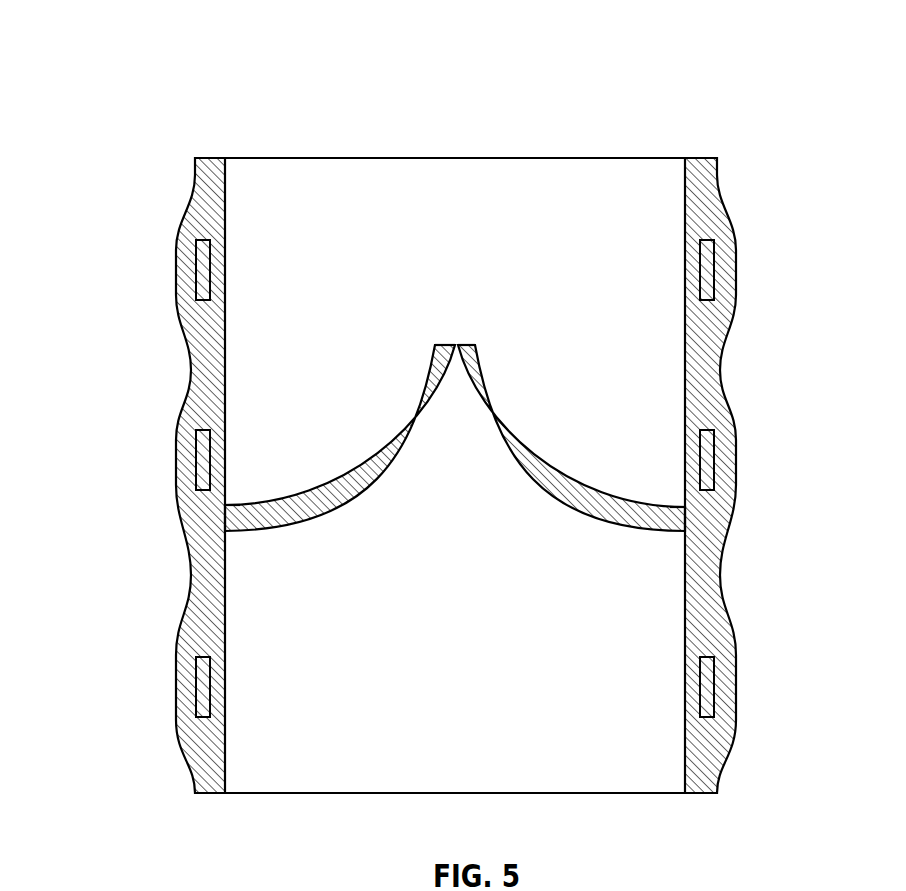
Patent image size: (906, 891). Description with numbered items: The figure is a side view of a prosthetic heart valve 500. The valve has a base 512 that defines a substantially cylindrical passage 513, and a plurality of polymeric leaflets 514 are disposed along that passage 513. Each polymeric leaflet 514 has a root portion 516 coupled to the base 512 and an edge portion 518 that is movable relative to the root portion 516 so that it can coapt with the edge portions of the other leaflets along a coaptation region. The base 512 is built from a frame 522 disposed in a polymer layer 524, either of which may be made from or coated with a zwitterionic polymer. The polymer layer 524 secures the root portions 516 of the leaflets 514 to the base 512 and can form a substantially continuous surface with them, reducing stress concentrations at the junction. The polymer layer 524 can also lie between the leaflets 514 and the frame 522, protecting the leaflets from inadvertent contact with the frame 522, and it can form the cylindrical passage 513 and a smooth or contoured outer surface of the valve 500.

The prosthetic heart valve 500 is at (121, 44).
The base 512 is at (740, 378).
The substantially cylindrical passage 513 is at (448, 182).
The polymeric leaflets 514 is at (402, 397).
The root portion 516 is at (278, 502).
The edge portion 518 is at (437, 344).
The frame 522 is at (707, 258).
The polymer layer 524 is at (705, 598).